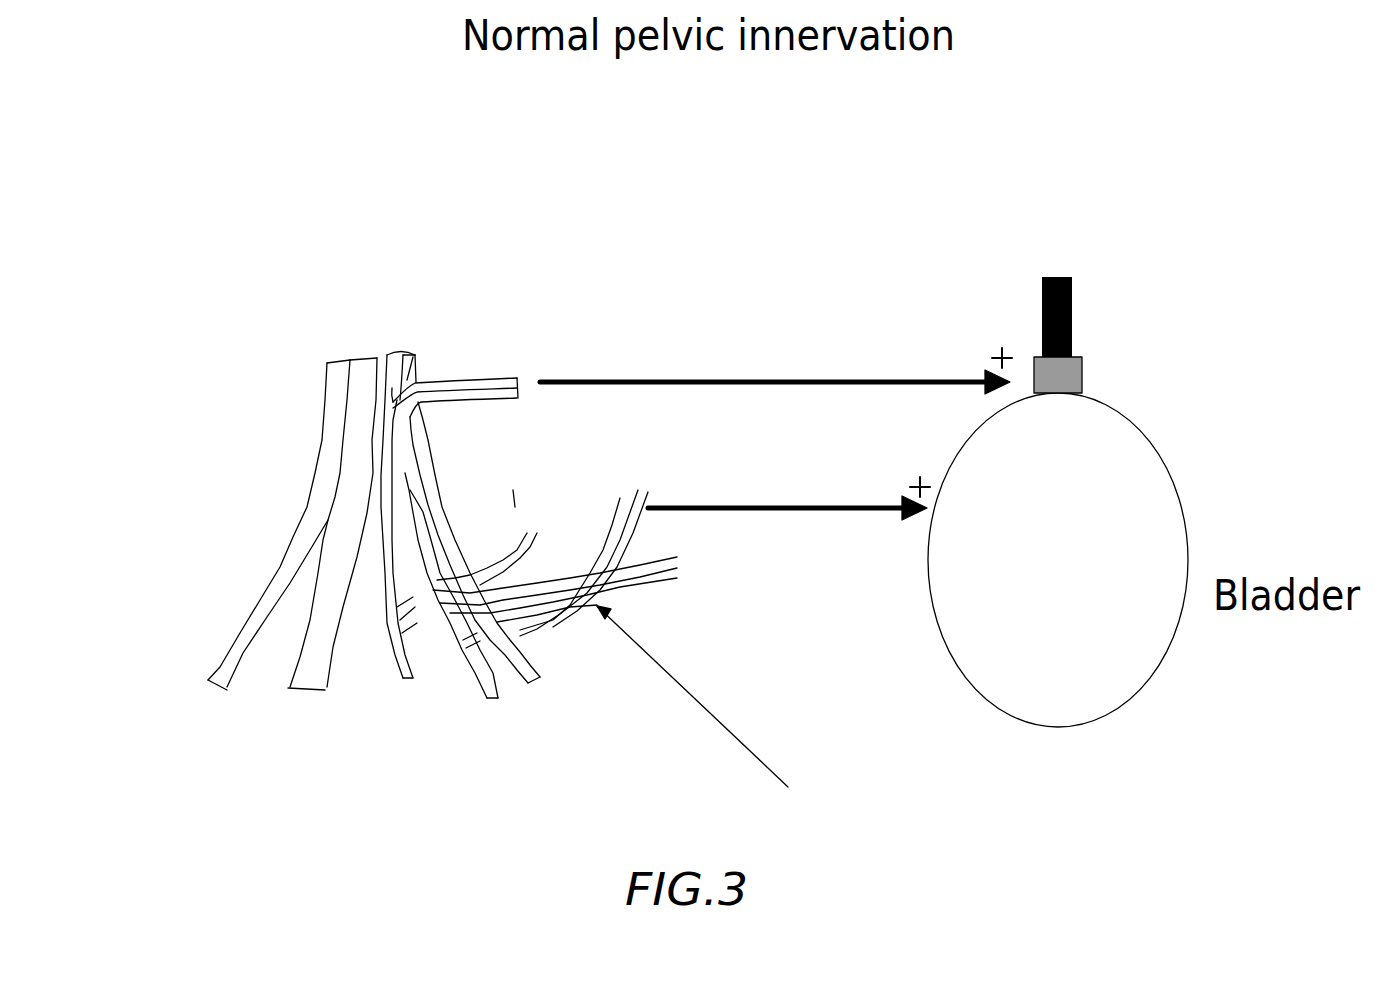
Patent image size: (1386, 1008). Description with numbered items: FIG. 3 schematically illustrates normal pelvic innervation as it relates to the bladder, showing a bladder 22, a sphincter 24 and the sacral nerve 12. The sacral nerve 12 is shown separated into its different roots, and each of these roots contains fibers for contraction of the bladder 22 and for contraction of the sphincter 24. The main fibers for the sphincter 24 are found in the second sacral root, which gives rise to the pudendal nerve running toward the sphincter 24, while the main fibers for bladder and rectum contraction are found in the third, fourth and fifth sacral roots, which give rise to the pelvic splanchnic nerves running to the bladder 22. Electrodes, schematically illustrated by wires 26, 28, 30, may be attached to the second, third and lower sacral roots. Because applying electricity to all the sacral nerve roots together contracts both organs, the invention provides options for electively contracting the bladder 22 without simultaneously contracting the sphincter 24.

The sacral nerve 12 is at (258, 555).
The bladder 22 is at (1122, 392).
The sphincter 24 is at (1082, 355).
The electrode wire 26 is at (487, 552).
The electrode wire 28 is at (548, 578).
The electrode wire 30 is at (556, 634).